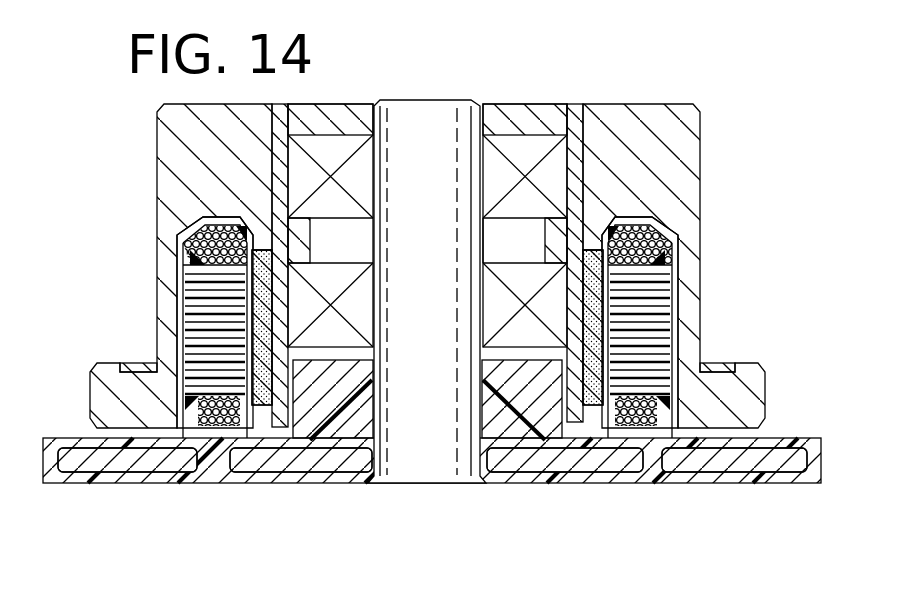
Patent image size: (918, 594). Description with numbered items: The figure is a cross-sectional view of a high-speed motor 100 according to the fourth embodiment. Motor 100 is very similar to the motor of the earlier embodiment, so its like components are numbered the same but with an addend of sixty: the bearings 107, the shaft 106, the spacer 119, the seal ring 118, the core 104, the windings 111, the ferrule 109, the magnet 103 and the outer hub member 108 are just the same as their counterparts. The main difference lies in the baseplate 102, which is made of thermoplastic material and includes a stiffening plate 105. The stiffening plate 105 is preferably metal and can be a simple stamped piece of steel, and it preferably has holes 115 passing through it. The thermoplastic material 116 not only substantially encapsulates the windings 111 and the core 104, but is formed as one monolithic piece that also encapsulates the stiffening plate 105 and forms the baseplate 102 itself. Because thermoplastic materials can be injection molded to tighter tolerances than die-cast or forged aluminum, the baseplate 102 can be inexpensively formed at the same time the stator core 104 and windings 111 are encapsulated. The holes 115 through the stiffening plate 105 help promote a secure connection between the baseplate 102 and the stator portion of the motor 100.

The motor 100 is at (722, 171).
The baseplate 102 is at (790, 477).
The magnet 103 is at (260, 405).
The core 104 is at (665, 310).
The stiffening plate 105 is at (717, 458).
The shaft 106 is at (433, 118).
The bearings 107 is at (513, 145).
The outer hub member 108 is at (683, 138).
The ferrule 109 is at (577, 117).
The windings 111 is at (670, 248).
The holes 115 is at (223, 463).
The thermoplastic material 116 is at (187, 243).
The seal ring 118 is at (333, 113).
The spacer 119 is at (557, 236).